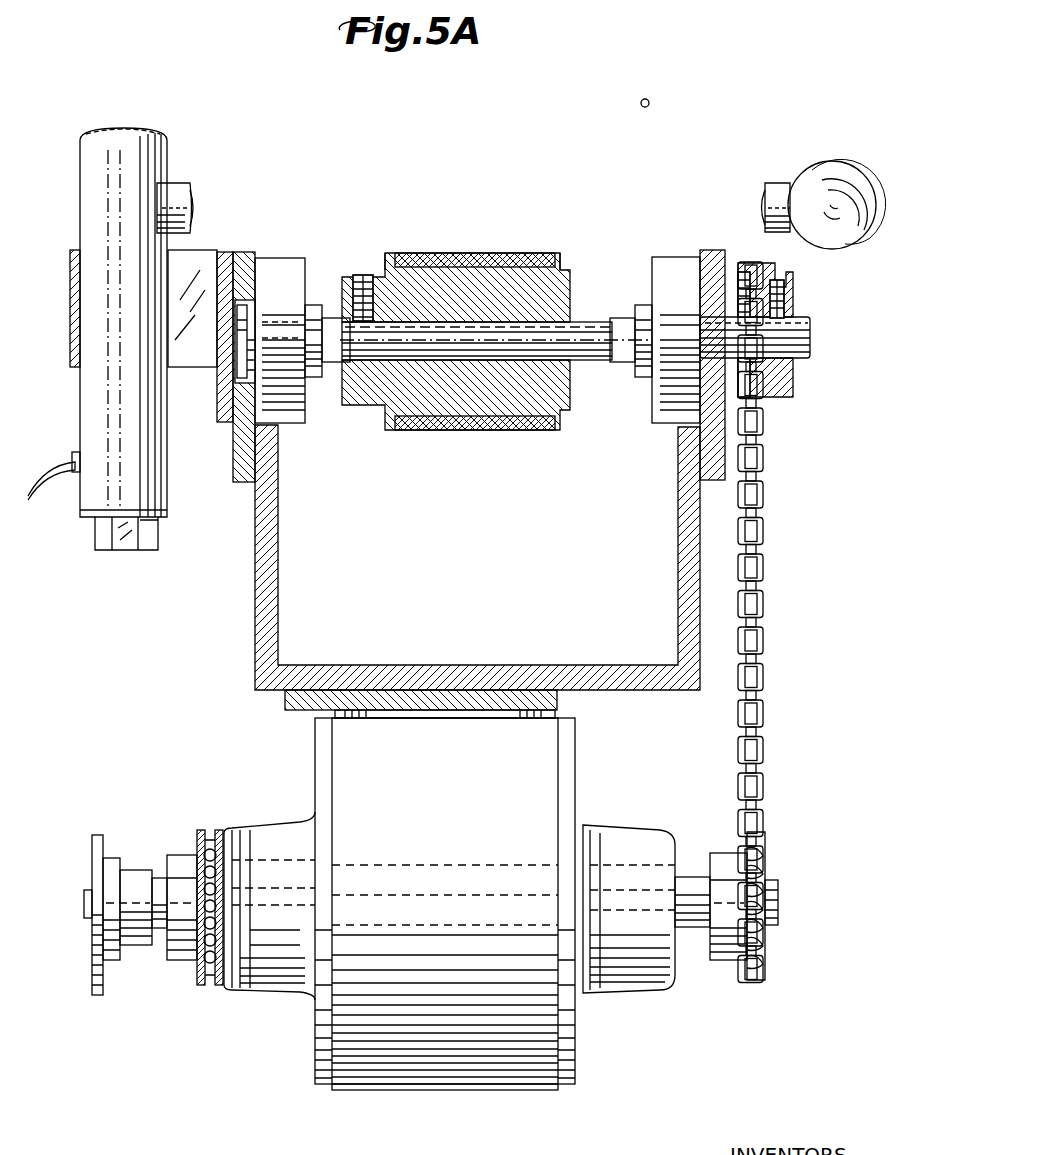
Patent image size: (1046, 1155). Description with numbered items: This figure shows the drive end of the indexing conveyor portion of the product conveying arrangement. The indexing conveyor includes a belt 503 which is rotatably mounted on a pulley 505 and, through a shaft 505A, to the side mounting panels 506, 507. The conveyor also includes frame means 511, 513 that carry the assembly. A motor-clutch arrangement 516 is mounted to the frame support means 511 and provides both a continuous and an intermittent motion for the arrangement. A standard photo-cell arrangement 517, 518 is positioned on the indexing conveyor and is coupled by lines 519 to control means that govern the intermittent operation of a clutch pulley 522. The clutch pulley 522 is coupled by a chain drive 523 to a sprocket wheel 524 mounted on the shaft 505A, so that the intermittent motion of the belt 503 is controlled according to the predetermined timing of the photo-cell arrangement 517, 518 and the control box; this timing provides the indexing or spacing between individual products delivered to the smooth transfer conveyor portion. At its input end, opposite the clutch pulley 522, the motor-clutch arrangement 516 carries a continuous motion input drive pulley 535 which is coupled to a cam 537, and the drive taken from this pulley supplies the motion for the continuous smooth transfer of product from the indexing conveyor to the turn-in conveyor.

The belt 503 is at (535, 256).
The pulley 505 is at (418, 290).
The shaft 505A is at (607, 332).
The side mounting panel 506 is at (243, 483).
The side mounting panel 507 is at (718, 472).
The frame support means 511 is at (286, 703).
The frame means 513 is at (255, 636).
The motor-clutch arrangement 516 is at (455, 1088).
The photo-cell arrangement 517 is at (822, 178).
The photo-cell arrangement 518 is at (92, 186).
The lines 519 is at (46, 470).
The clutch pulley 522 is at (730, 856).
The chain drive 523 is at (768, 600).
The sprocket wheel 524 is at (792, 378).
The continuous motion input drive pulley 535 is at (186, 946).
The cam 537 is at (95, 990).